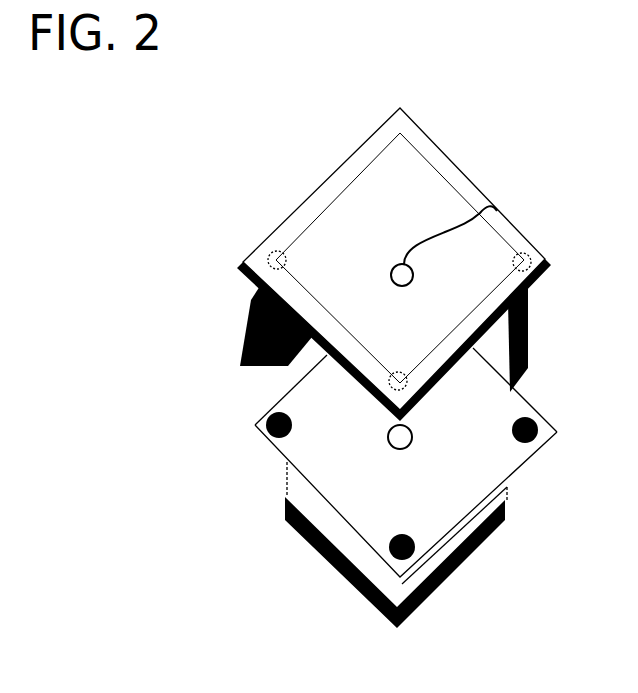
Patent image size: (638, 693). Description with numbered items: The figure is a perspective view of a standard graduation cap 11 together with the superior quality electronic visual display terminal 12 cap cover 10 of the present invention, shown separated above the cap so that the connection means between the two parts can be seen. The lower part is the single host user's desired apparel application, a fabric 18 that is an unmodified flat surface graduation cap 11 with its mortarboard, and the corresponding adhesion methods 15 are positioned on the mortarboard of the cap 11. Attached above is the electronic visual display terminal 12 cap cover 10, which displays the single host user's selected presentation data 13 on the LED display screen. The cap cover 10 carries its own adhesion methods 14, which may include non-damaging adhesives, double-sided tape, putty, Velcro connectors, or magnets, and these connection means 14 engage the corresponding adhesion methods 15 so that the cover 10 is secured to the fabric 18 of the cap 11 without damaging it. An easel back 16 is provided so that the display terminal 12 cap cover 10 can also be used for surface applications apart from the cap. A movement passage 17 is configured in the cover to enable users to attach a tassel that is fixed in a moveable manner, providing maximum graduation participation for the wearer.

The cap cover 10 is at (466, 146).
The graduation cap 11 is at (537, 466).
The electronic visual display terminal 12 is at (306, 223).
The presentation data 13 is at (426, 310).
The adhesion methods 14 is at (554, 262).
The adhesion methods under the cap 15 is at (254, 429).
The easel back 16 is at (228, 311).
The movement passage 17 is at (435, 268).
The fabric 18 is at (419, 627).